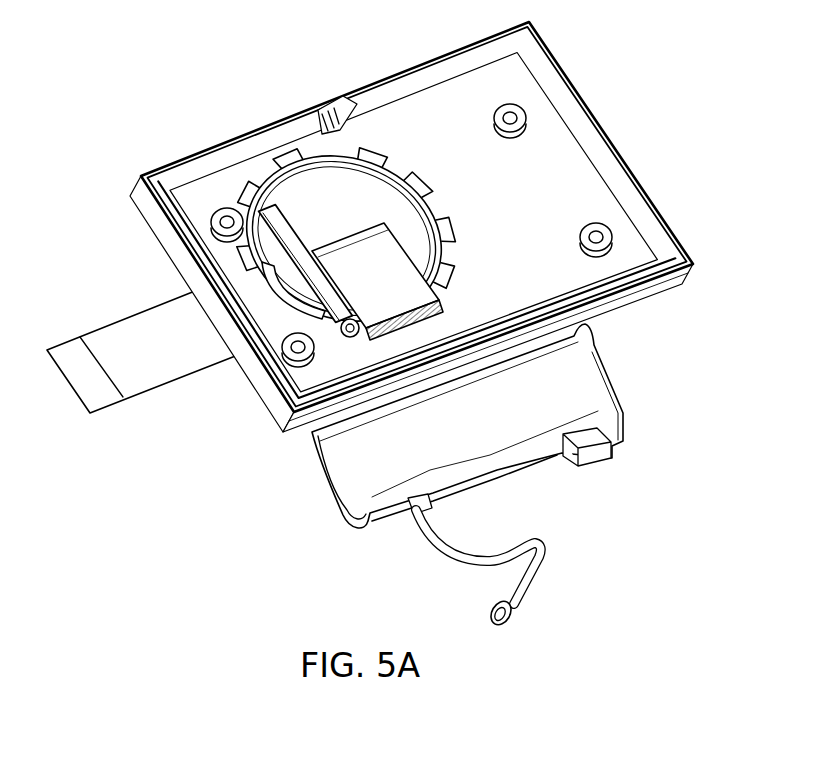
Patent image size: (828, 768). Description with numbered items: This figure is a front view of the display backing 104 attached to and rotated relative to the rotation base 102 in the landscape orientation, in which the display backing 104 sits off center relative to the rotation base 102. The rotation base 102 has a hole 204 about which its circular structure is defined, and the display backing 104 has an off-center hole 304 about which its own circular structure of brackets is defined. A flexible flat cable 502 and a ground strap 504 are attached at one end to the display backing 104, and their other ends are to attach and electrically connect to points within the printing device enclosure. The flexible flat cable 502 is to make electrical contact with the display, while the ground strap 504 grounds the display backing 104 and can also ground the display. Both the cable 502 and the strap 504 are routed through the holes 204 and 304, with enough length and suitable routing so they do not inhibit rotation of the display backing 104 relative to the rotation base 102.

The rotation base 102 is at (590, 398).
The display backing 104 is at (549, 78).
The hole 204 is at (343, 187).
The off-center hole 304 is at (344, 190).
The flexible flat cable 502 is at (123, 335).
The ground strap 504 is at (274, 210).